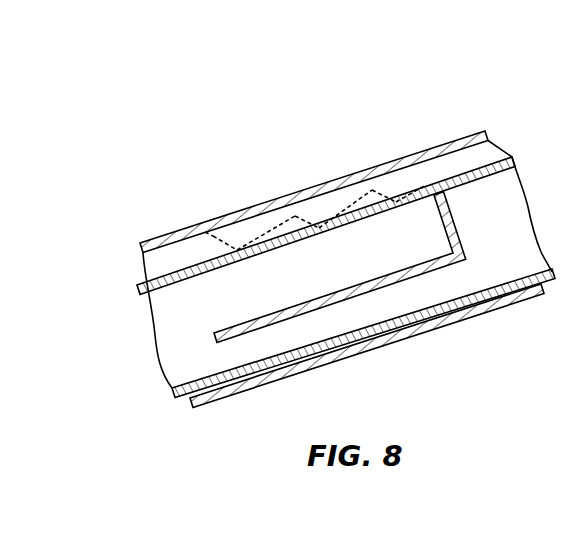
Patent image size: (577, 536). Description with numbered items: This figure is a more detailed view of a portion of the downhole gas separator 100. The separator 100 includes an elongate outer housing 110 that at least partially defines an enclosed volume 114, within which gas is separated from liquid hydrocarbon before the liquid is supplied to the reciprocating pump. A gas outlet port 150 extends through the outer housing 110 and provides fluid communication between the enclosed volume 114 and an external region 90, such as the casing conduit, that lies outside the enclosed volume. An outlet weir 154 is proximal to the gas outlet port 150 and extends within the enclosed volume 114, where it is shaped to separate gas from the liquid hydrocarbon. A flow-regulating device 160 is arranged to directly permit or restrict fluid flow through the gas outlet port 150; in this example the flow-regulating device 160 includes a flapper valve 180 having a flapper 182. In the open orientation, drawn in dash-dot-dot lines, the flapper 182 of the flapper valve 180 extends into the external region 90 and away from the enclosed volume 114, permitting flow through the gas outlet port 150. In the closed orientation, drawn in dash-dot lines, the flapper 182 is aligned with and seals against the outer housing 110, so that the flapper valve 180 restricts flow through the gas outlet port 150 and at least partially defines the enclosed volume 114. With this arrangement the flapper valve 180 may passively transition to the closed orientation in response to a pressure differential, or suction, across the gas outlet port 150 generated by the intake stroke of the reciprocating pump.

The downhole gas separator 100 is at (137, 138).
The external region 90 is at (453, 163).
The outer housing 110 is at (260, 391).
The enclosed volume 114 is at (168, 338).
The gas outlet port 150 is at (228, 248).
The outlet weir 154 is at (317, 312).
The flow-regulating device 160 is at (214, 236).
The flapper valve 180 is at (256, 280).
The flapper 182 is at (382, 216).